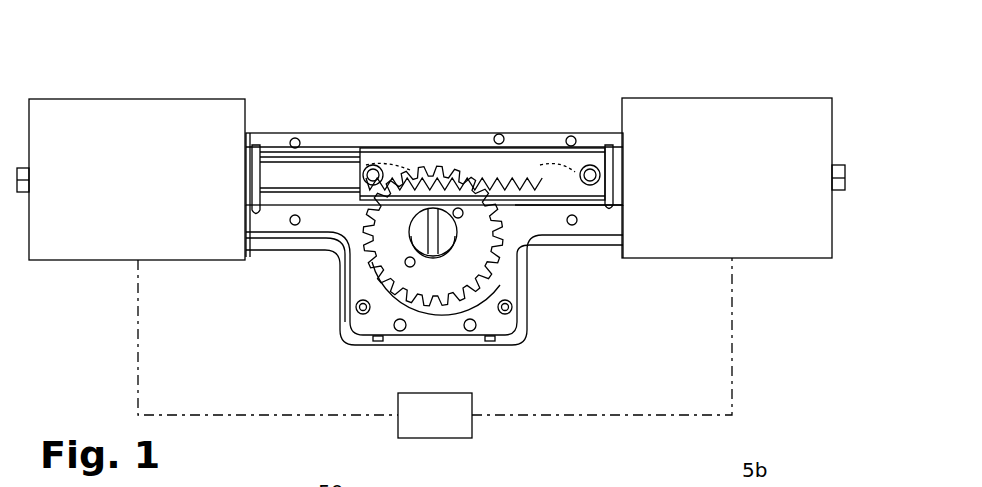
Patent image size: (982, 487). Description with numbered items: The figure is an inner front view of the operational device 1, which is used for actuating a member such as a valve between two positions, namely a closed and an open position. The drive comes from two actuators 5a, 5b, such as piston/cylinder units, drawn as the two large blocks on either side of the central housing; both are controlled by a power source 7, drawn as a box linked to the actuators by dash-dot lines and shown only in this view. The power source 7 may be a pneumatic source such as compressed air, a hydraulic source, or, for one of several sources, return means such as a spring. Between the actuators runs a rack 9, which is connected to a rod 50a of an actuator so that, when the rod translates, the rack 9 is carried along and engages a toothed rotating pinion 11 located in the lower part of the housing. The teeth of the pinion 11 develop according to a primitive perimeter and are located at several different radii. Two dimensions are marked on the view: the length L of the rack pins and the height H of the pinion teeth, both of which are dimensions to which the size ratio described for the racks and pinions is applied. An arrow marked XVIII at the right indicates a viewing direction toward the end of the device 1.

The device 1 is at (285, 294).
The actuator 5a is at (157, 157).
The actuator 5b is at (793, 128).
The power source 7 is at (435, 348).
The rack 9 is at (522, 187).
The toothed rotating pinion 11 is at (442, 272).
The rod 50a is at (313, 180).
The length of the rack pins L is at (487, 172).
The height of the pinion teeth H is at (527, 212).
The section view direction XVIII is at (920, 178).